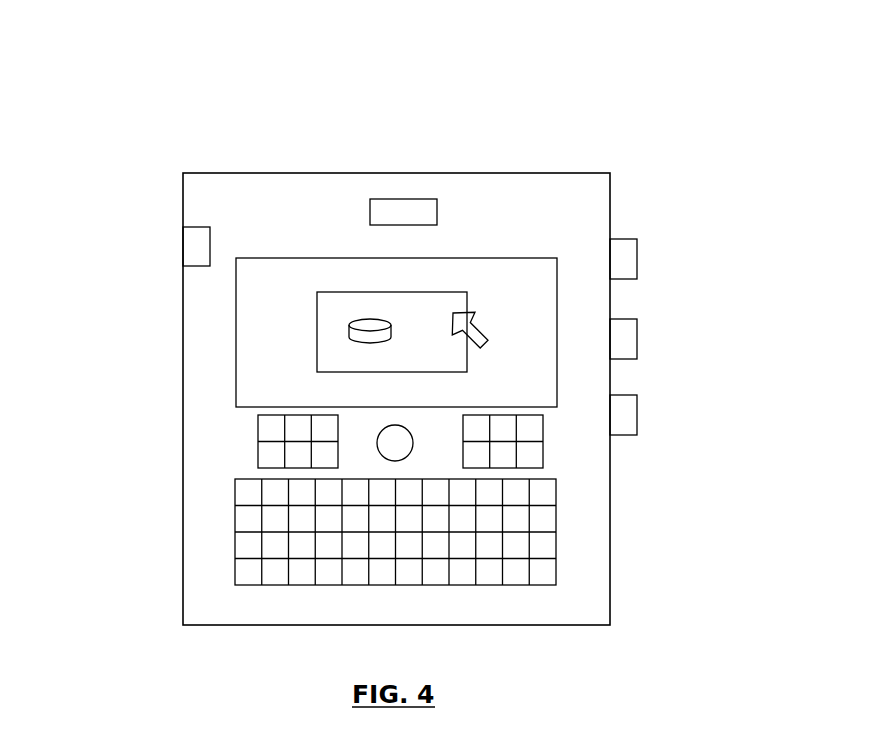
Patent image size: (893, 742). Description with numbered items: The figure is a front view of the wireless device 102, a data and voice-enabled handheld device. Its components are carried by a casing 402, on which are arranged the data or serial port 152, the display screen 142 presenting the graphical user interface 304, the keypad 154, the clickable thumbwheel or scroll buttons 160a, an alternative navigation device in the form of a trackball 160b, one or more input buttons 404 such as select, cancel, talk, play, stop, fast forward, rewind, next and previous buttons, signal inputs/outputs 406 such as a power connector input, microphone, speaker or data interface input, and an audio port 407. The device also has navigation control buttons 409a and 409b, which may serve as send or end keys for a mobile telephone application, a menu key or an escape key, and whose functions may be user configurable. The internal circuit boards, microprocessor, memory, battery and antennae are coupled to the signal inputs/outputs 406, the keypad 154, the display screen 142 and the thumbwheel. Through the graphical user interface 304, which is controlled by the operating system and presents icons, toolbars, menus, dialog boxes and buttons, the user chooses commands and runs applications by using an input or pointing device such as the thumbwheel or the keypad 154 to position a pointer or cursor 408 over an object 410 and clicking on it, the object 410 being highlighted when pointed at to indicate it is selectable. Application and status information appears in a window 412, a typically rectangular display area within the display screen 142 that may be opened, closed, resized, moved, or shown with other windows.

The wireless device 102 is at (577, 93).
The casing 402 is at (292, 198).
The signal inputs/outputs 406 is at (410, 198).
The data or serial port 152 is at (197, 246).
The display screen 142 is at (237, 293).
The graphical user interface (GUI) 304 is at (248, 318).
The window 412 is at (437, 305).
The object 410 is at (350, 330).
The pointer or cursor 408 is at (488, 342).
The clickable thumbwheel or scroll buttons 160a is at (637, 258).
The input buttons 404 is at (637, 340).
The audio port 407 is at (637, 415).
The navigation control button 409a is at (258, 425).
The navigation control button 409b is at (543, 434).
The trackball 160b is at (404, 454).
The keypad 154 is at (557, 518).